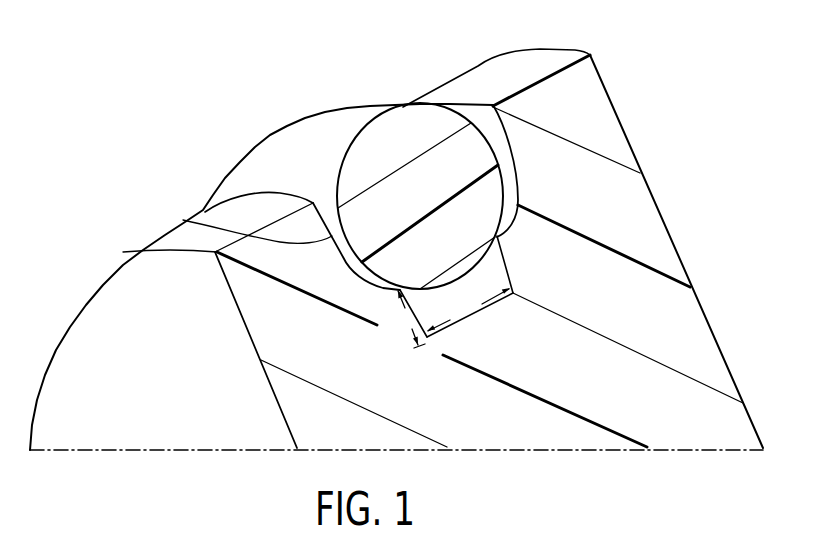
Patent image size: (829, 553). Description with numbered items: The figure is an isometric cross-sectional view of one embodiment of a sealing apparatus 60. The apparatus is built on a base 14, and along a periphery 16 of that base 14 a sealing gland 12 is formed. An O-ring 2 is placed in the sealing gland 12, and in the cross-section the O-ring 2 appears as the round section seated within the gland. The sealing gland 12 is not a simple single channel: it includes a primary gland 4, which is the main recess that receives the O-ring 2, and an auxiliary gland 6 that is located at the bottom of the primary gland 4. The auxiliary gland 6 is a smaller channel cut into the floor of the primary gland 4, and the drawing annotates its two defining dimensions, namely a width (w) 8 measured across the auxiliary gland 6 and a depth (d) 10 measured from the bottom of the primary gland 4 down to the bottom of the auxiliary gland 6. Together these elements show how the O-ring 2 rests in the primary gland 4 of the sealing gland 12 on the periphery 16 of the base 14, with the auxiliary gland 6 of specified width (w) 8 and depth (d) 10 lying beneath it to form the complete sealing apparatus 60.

The sealing apparatus 60 is at (227, 123).
The O-ring 2 is at (347, 123).
The primary gland 4 is at (518, 197).
The auxiliary gland 6 is at (517, 300).
The width (w) 8 is at (453, 319).
The depth (d) 10 is at (398, 327).
The sealing gland 12 is at (183, 222).
The base 14 is at (665, 430).
The periphery 16 is at (493, 73).